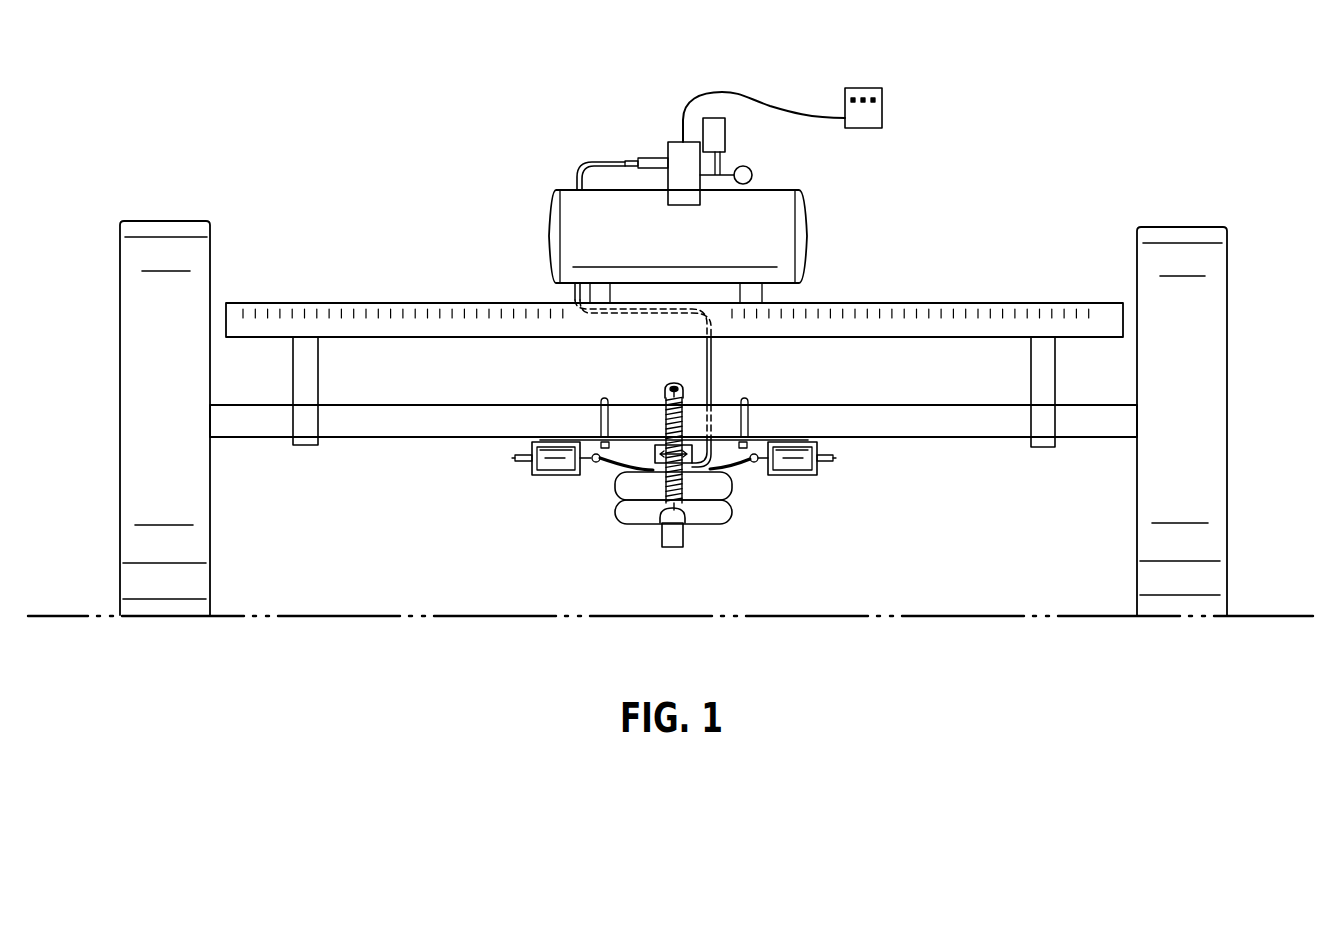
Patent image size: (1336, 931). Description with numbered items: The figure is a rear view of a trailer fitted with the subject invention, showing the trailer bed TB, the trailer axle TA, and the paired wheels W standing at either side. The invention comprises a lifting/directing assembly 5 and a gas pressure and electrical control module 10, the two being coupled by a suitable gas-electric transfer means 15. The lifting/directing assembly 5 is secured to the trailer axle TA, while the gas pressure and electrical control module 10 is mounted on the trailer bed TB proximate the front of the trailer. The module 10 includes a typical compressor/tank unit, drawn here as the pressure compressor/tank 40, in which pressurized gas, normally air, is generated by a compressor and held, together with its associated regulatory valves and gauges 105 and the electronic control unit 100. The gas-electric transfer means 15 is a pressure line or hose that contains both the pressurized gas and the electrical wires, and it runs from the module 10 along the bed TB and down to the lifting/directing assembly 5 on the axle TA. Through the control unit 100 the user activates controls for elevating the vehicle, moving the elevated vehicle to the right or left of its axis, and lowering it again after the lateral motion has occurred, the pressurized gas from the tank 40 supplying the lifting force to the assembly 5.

The lifting/directing assembly 5 is at (498, 378).
The gas pressure and electrical control module 10 is at (719, 169).
The gas-electric transfer means 15 is at (713, 386).
The pressure compressor/tank 40 is at (570, 250).
The electronic control unit 100 is at (860, 88).
The regulatory valves and gauges 105 is at (753, 118).
The paired wheels W is at (180, 219).
The trailer axle TA is at (877, 432).
The trailer bed TB is at (1010, 308).